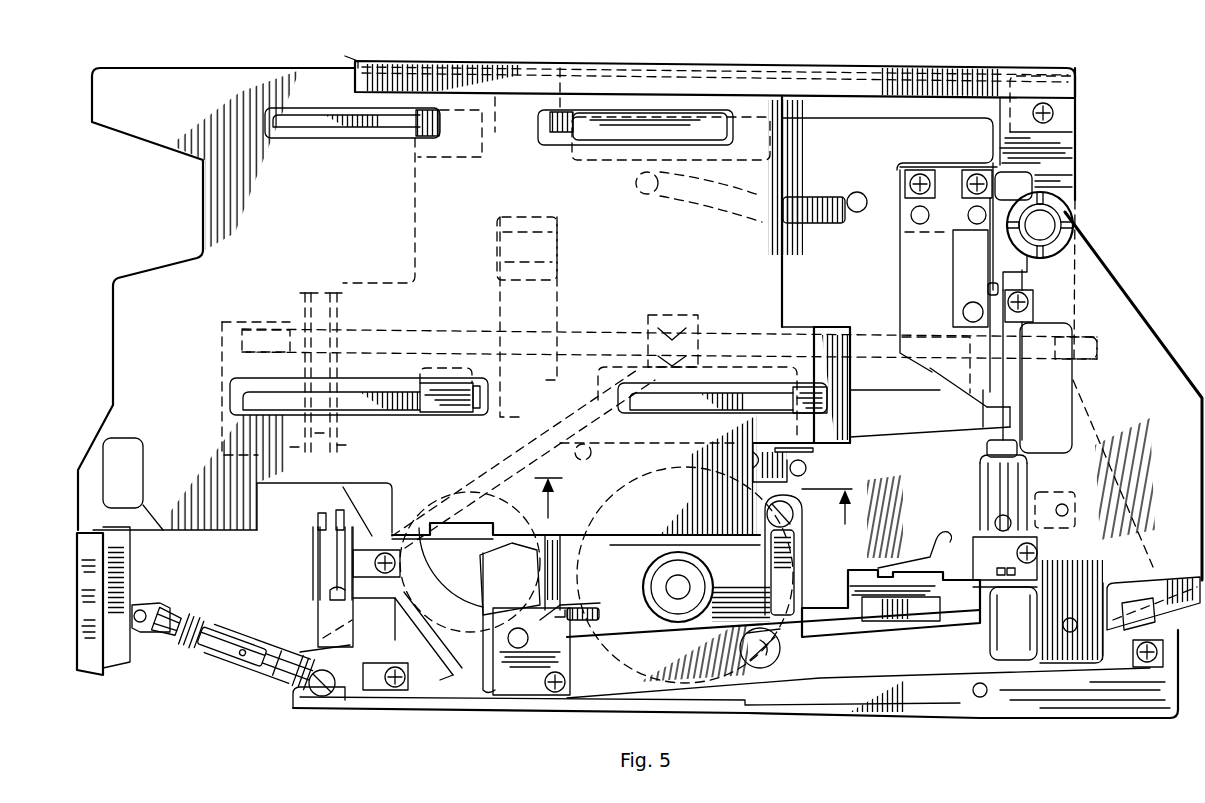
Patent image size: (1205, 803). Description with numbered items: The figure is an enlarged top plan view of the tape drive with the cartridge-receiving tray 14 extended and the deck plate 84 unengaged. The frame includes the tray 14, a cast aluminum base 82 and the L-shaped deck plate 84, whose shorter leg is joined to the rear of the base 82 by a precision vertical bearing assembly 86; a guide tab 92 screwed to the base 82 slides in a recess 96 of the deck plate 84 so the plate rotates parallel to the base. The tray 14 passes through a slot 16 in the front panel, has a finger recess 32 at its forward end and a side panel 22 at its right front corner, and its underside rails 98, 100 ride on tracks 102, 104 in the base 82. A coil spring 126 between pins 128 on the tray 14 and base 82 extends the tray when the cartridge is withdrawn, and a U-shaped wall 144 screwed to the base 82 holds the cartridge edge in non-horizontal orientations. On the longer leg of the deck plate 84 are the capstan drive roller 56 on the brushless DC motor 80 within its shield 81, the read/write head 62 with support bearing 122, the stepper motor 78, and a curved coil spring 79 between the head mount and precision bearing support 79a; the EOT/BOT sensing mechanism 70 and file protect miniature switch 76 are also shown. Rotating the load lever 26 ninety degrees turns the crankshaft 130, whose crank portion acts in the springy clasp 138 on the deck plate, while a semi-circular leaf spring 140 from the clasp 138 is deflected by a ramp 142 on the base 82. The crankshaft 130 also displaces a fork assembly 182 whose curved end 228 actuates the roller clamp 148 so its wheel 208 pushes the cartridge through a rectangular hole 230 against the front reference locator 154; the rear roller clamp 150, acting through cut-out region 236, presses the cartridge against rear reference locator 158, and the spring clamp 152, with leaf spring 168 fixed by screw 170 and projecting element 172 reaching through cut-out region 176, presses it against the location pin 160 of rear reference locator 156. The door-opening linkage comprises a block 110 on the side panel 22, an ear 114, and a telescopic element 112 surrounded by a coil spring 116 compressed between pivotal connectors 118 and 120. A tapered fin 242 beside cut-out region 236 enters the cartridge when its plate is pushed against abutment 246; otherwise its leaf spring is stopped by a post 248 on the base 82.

The tray 14 is at (152, 72).
The recess 32 is at (130, 272).
The deck plate 84 is at (1130, 330).
The U-shaped wall 144 is at (657, 62).
The L-shaped rail 98 is at (352, 128).
The track 102 is at (418, 130).
The semi-circular leaf spring 140 is at (558, 318).
The ramp 142 is at (497, 252).
The crankshaft 130 is at (472, 328).
The fork assembly 182 is at (305, 298).
The load lever 26 is at (226, 428).
The clasp 138 is at (665, 314).
The pins 128 is at (641, 193).
The coil spring 126 is at (818, 224).
The abutment 246 is at (834, 340).
The screw 170 is at (968, 172).
The spring clamp 152 is at (955, 278).
The cut-out region 176 is at (952, 250).
The projecting element 172 is at (963, 312).
The cartridge location pin 160 is at (986, 289).
The reference locator 156 is at (1033, 285).
The precision vertical bearing assembly 86 is at (1057, 220).
The leaf spring 168 is at (935, 373).
The L-shaped rail 100 is at (398, 410).
The track 104 is at (462, 412).
The cut-out region 236 is at (755, 445).
The fin 242 is at (835, 448).
The post 248 is at (808, 469).
The stepper motor 78 is at (592, 525).
The slot 16 is at (693, 512).
The curved end 228 is at (324, 509).
The wheel 208 is at (318, 520).
The roller clamp 148 is at (306, 550).
The reference locator 154 is at (322, 608).
The rectangular hole 230 is at (148, 512).
The side panel 22 is at (89, 665).
The block 110 is at (117, 662).
The ear 114 is at (137, 628).
The pivotal connector 118 is at (162, 608).
The coil spring 116 is at (188, 612).
The telescopic element 112 is at (238, 660).
The pivotal connector 120 is at (305, 690).
The read/write magnetic head 62 is at (478, 572).
The support bearing 122 is at (490, 692).
The precision bearing support 79a is at (525, 694).
The coil spring 79 is at (590, 610).
The capstan drive roller 56 is at (708, 570).
The shield 81 is at (773, 646).
The brushless DC motor 80 is at (630, 678).
The EOT/BOT sensing mechanism 70 is at (795, 525).
The miniature switch 76 is at (852, 578).
The roller clamp 150 is at (992, 490).
The reference locator 158 is at (1010, 568).
The recess 96 is at (1160, 595).
The guide tab 92 is at (1130, 600).
The base 82 is at (1100, 708).